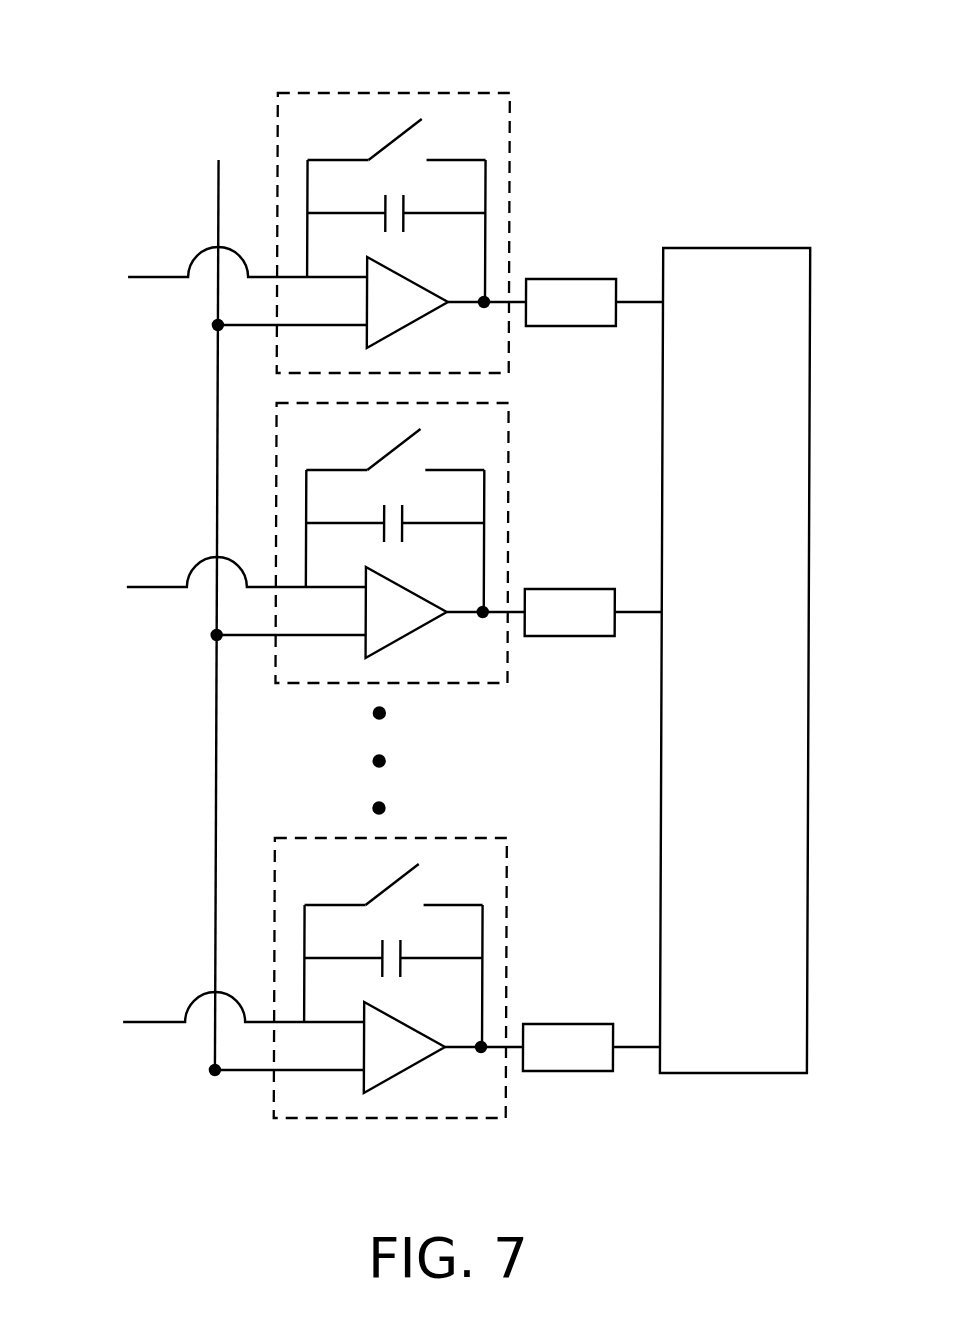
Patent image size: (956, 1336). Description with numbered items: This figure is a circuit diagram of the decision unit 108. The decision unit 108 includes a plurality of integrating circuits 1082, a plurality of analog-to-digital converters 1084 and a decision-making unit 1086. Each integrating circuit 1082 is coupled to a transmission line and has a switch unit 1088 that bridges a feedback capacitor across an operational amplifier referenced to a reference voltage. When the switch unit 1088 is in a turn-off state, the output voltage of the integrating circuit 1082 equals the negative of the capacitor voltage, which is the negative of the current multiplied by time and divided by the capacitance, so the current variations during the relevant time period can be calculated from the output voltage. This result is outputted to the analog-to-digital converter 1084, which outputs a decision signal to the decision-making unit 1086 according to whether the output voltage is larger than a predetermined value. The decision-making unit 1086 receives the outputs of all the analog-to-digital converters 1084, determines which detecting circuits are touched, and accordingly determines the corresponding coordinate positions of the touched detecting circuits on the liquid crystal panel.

The decision unit 108 is at (538, 35).
The integrating circuit 1082 is at (278, 200).
The analog-to-digital converter 1084 is at (570, 277).
The decision-making unit 1086 is at (737, 248).
The switch unit 1088 is at (387, 143).